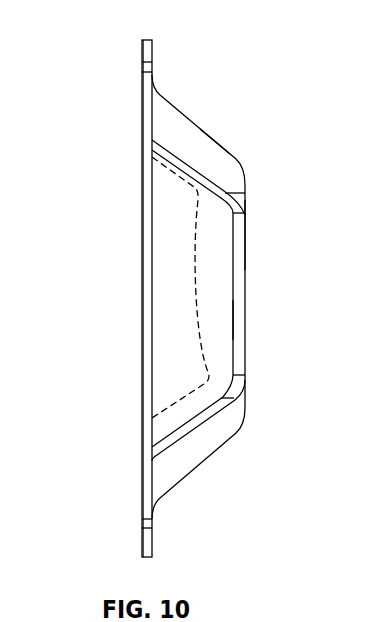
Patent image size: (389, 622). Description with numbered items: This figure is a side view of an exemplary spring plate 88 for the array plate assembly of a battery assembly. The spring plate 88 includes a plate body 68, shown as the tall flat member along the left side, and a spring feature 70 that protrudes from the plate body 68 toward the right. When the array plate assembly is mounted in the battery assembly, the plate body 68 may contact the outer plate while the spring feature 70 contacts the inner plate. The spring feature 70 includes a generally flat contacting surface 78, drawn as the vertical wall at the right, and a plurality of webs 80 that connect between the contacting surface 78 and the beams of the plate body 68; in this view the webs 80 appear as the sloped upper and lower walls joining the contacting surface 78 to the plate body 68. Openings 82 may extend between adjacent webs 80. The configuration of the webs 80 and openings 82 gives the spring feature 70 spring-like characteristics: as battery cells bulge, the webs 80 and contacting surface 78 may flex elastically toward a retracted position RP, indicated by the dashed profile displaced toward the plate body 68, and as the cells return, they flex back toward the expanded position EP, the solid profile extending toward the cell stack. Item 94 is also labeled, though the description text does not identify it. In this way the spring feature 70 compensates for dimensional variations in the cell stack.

The plate body 68 is at (86, 59).
The spring feature 70 is at (254, 220).
The contacting surface 78 is at (238, 285).
The webs 80 is at (197, 137).
The openings 82 is at (207, 325).
The spring plate 88 is at (256, 103).
The flange 94 is at (134, 164).
The expanded position EP is at (264, 249).
The retracted position RP is at (181, 297).